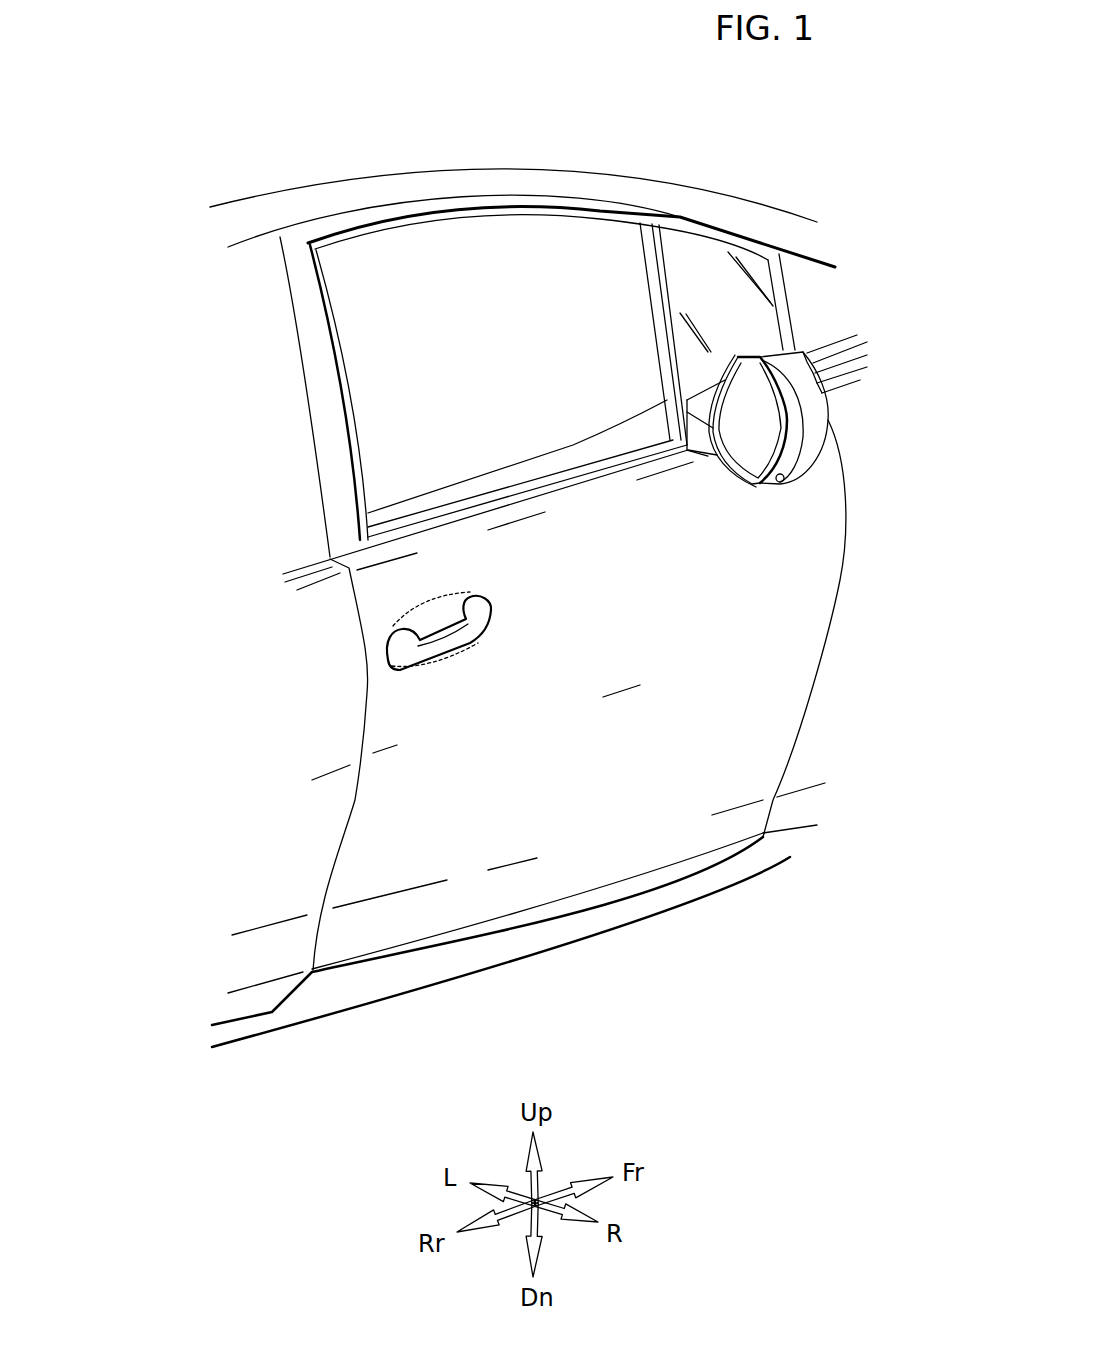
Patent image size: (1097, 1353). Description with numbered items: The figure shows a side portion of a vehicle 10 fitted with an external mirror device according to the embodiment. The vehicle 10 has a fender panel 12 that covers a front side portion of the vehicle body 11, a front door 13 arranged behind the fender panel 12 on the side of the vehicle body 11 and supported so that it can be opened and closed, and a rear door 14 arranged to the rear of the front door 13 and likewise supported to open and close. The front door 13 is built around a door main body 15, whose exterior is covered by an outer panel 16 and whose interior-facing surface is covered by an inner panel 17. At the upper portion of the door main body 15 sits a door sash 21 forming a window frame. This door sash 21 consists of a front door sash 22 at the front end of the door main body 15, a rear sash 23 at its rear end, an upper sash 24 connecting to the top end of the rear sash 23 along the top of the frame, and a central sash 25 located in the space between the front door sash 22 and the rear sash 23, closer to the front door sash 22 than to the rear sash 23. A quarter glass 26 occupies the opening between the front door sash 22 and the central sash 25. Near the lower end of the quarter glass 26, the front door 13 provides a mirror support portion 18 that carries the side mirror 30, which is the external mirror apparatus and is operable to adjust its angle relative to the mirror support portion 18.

The vehicle 10 is at (180, 118).
The vehicle body 11 is at (287, 187).
The fender panel 12 is at (823, 739).
The front door 13 is at (515, 815).
The rear door 14 is at (250, 885).
The door main body 15 is at (619, 686).
The outer panel 16 is at (767, 659).
The inner panel 17 is at (527, 468).
The mirror support portion 18 is at (710, 460).
The door sash 21 is at (778, 137).
The front door sash 22 is at (782, 292).
The rear sash 23 is at (330, 366).
The upper sash 24 is at (498, 207).
The central sash 25 is at (667, 295).
The quarter glass 26 is at (747, 320).
The side mirror 30 is at (818, 435).